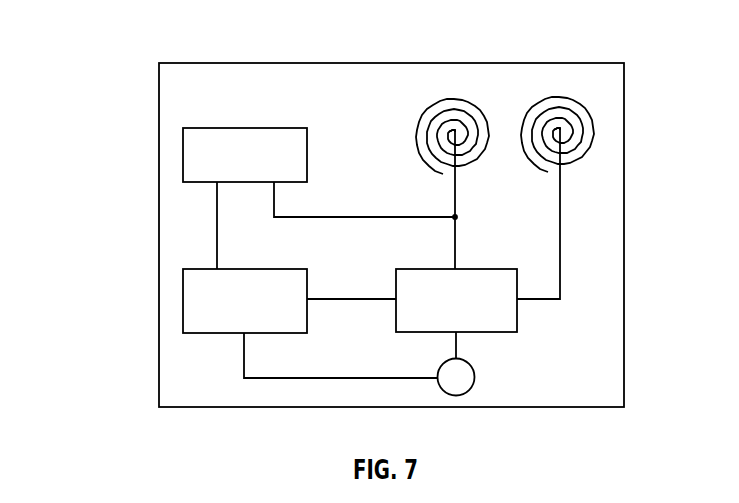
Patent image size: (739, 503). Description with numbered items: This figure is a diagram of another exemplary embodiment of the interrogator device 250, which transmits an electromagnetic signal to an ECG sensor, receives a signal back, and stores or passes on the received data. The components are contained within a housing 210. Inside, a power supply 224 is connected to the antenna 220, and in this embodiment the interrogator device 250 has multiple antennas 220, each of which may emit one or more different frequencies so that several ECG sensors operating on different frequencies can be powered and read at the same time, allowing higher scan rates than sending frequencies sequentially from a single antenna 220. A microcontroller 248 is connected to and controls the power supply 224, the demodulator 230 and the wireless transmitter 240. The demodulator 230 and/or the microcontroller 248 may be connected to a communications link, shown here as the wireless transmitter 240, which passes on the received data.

The interrogator device 250 is at (126, 40).
The housing 210 is at (159, 235).
The power supply 224 is at (275, 128).
The microcontroller 248 is at (265, 269).
The demodulator 230 is at (435, 268).
The wireless transmitter 240 is at (470, 365).
The antenna 220 is at (548, 100).